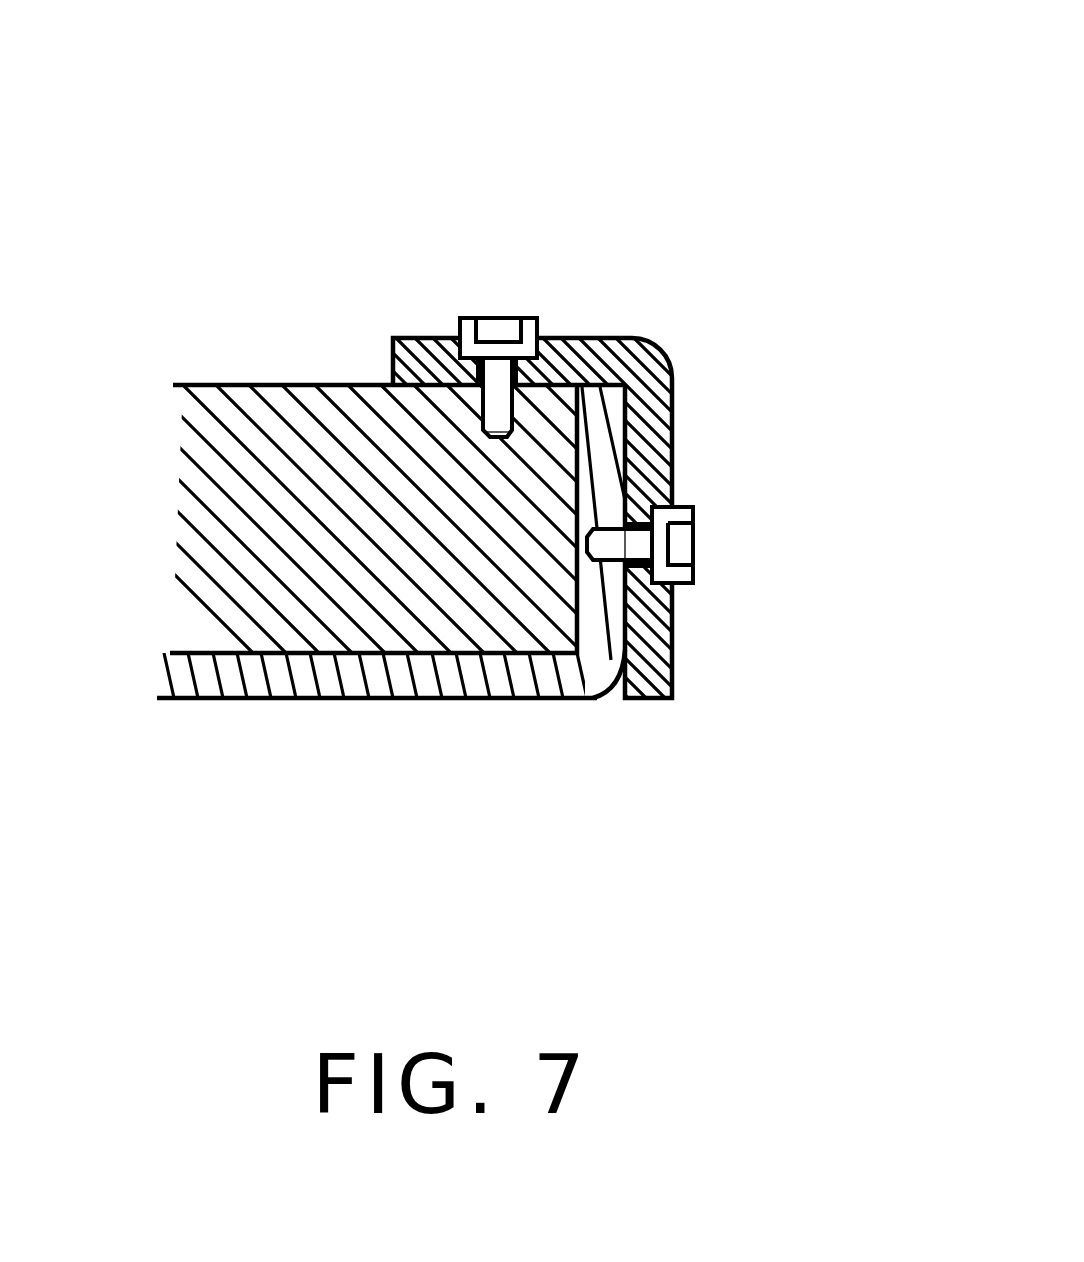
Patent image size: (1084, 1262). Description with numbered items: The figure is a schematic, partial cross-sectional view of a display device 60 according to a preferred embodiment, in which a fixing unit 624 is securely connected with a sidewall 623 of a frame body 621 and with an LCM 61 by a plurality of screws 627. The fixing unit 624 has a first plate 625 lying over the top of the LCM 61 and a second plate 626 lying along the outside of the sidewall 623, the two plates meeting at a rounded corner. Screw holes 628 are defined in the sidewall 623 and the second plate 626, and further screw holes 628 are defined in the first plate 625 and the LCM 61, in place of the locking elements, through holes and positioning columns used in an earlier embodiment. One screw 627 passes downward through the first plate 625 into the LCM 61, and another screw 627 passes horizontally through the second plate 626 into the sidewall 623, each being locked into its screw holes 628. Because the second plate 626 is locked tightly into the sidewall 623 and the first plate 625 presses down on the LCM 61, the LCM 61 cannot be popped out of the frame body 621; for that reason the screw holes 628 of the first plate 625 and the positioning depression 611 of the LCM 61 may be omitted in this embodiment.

The display device 60 is at (524, 414).
The LCM 61 is at (287, 407).
The positioning depression 611 is at (510, 432).
The frame body 621 is at (263, 696).
The sidewall 623 is at (603, 613).
The fixing unit 624 is at (649, 486).
The first plate 625 is at (600, 345).
The second plate 626 is at (645, 440).
The screw 627 is at (495, 387).
The screw hole 628 is at (640, 575).